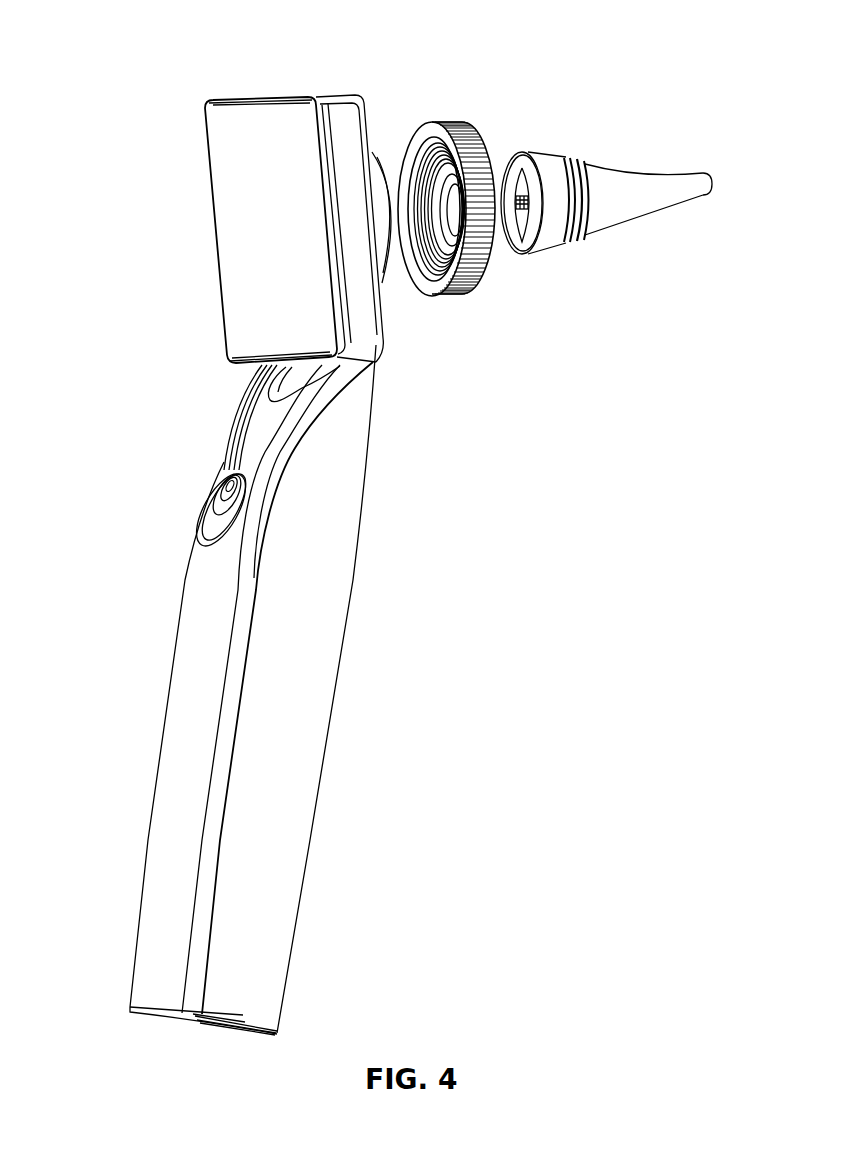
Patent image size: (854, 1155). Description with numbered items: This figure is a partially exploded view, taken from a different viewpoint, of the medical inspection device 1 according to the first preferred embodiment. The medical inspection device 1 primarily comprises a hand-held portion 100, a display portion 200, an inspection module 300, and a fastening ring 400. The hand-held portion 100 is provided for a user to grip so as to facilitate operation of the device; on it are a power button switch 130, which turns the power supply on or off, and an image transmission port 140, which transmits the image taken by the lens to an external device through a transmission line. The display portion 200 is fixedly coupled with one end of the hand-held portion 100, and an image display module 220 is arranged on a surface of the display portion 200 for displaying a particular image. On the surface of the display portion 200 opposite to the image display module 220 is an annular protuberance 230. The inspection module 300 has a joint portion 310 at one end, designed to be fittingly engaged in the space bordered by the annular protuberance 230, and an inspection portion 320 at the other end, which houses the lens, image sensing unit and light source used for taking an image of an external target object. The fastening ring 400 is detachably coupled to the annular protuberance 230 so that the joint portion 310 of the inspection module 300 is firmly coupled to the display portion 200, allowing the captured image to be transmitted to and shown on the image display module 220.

The medical inspection device 1 is at (110, 122).
The hand-held portion 100 is at (312, 850).
The power button switch 130 is at (242, 473).
The image transmission port 140 is at (214, 1024).
The display portion 200 is at (268, 90).
The image display module 220 is at (233, 98).
The annular protuberance 230 is at (372, 153).
The inspection module 300 is at (648, 175).
The joint portion 310 is at (557, 243).
The inspection portion 320 is at (712, 178).
The fastening ring 400 is at (457, 147).